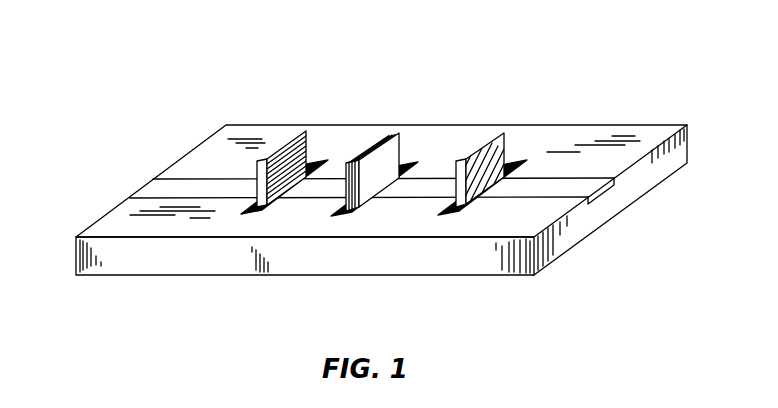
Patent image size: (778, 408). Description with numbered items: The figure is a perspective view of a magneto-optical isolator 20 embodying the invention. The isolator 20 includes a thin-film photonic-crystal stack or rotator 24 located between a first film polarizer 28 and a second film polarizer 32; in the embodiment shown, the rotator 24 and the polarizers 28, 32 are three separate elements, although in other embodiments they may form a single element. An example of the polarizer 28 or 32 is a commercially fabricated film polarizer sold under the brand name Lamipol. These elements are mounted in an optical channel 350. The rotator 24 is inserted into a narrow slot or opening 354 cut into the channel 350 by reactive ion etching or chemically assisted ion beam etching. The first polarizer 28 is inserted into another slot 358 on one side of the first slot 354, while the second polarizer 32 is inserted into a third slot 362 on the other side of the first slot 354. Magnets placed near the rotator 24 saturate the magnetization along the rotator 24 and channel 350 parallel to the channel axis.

The magneto-optical isolator 20 is at (596, 36).
The rotator 24 is at (392, 127).
The first film polarizer 28 is at (300, 127).
The second film polarizer 32 is at (498, 127).
The optical channel 350 is at (155, 190).
The slot 354 is at (335, 213).
The slot 358 is at (246, 214).
The slot 362 is at (437, 215).